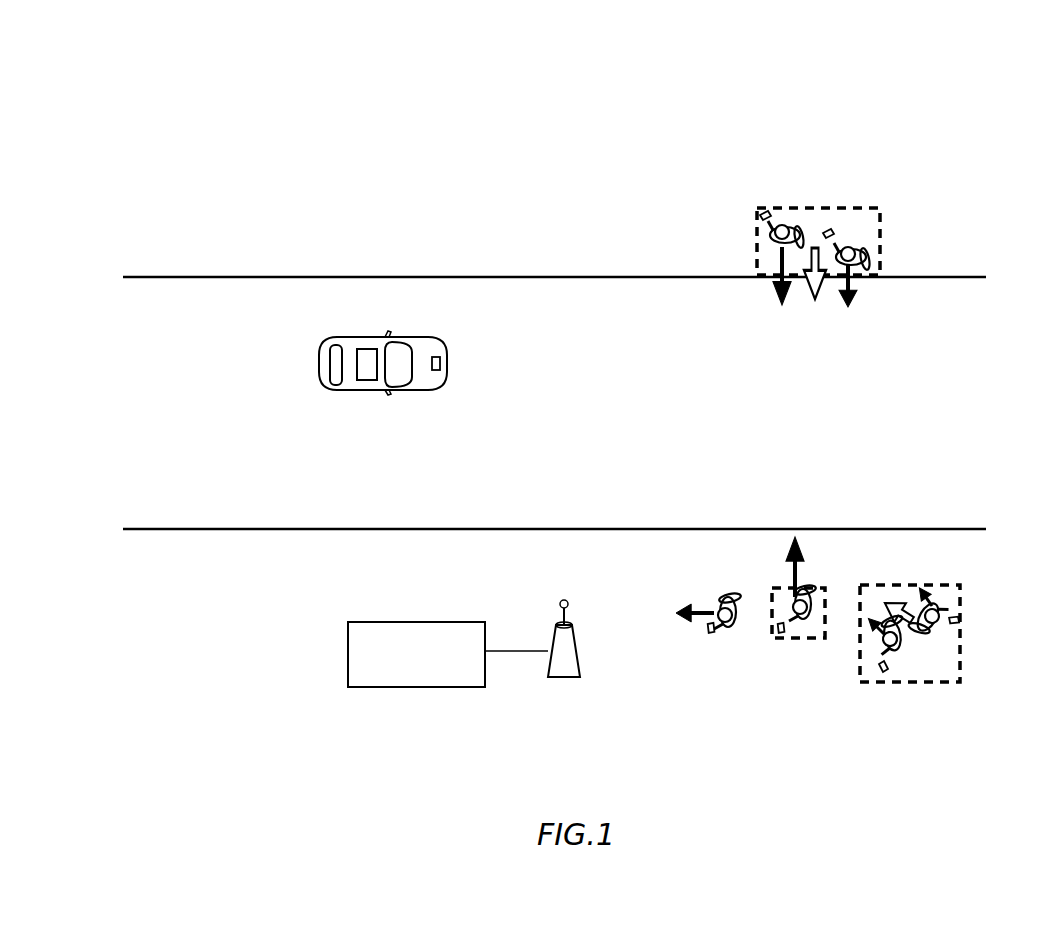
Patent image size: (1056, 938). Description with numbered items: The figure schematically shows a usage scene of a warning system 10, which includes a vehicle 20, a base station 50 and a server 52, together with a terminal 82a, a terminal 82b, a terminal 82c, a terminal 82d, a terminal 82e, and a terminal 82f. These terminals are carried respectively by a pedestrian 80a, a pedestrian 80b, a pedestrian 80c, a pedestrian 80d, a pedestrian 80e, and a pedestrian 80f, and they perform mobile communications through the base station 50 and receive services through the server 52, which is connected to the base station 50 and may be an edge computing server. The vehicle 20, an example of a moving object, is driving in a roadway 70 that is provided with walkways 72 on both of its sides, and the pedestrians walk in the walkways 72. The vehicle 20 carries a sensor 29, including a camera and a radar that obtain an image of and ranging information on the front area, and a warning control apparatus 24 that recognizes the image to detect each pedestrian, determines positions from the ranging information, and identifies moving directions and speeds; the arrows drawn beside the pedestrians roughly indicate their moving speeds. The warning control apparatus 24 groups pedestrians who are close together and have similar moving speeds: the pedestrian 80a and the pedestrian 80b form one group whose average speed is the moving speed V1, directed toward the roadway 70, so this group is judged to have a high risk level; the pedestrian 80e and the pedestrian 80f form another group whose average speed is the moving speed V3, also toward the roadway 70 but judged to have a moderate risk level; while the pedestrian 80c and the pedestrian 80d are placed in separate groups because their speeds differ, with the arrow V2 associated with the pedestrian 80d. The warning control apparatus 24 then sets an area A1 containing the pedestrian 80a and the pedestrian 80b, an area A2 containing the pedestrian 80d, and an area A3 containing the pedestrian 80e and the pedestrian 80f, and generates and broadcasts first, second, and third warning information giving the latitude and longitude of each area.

The warning system 10 is at (996, 86).
The vehicle 20 is at (320, 367).
The warning control apparatus 24 is at (362, 381).
The sensor 29 is at (437, 356).
The base station 50 is at (553, 627).
The server 52 is at (432, 622).
The roadway 70 is at (188, 499).
The walkway 72 is at (188, 239).
The pedestrian 80a is at (860, 246).
The pedestrian 80b is at (778, 224).
The pedestrian 80c is at (729, 636).
The pedestrian 80d is at (808, 630).
The pedestrian 80e is at (878, 660).
The pedestrian 80f is at (952, 608).
The terminal 82a is at (830, 230).
The terminal 82b is at (768, 212).
The terminal 82c is at (712, 633).
The terminal 82d is at (781, 632).
The terminal 82e is at (888, 670).
The terminal 82f is at (955, 630).
The area A1 is at (883, 245).
The area A2 is at (778, 594).
The area A3 is at (961, 682).
The moving speed V1 is at (819, 287).
The group velocity vector V2 is at (811, 567).
The moving speed V3 is at (888, 601).